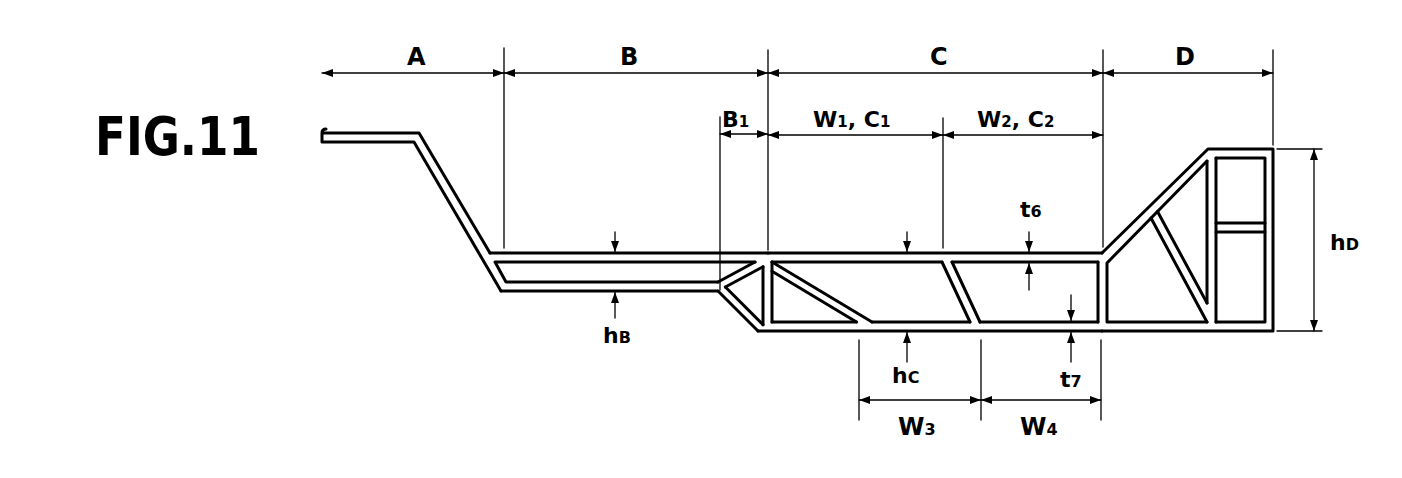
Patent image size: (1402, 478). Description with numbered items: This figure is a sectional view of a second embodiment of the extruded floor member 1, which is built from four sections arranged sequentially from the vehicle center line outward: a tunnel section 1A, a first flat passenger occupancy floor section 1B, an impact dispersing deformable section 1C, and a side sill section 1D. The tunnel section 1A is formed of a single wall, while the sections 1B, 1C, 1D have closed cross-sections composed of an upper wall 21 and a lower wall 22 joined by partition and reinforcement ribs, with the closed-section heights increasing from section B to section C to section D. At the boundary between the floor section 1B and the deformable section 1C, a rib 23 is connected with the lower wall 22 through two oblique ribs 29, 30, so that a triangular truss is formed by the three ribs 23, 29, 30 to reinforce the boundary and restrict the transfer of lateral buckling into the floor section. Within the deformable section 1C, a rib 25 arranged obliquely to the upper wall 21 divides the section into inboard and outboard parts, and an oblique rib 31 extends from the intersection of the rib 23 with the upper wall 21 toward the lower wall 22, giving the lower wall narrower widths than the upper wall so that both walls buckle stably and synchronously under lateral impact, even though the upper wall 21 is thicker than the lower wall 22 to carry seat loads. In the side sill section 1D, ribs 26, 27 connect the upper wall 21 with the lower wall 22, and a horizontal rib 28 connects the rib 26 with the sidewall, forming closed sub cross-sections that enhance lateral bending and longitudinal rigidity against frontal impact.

The extruded floor member 1 is at (1290, 131).
The tunnel section 1A is at (362, 146).
The first flat passenger occupancy floor section 1B is at (539, 251).
The impact dispersing deformable section 1C is at (865, 251).
The side sill section 1D is at (1197, 333).
The upper wall 21 is at (837, 252).
The lower wall 22 is at (827, 333).
The rib 23 is at (745, 296).
The vertical rib 25 is at (972, 295).
The vertical rib 26 is at (1205, 190).
The vertical rib 27 is at (1172, 235).
The horizontal rib 28 is at (1247, 227).
The oblique rib 29 is at (728, 273).
The oblique rib 30 is at (735, 303).
The oblique rib 31 is at (812, 292).